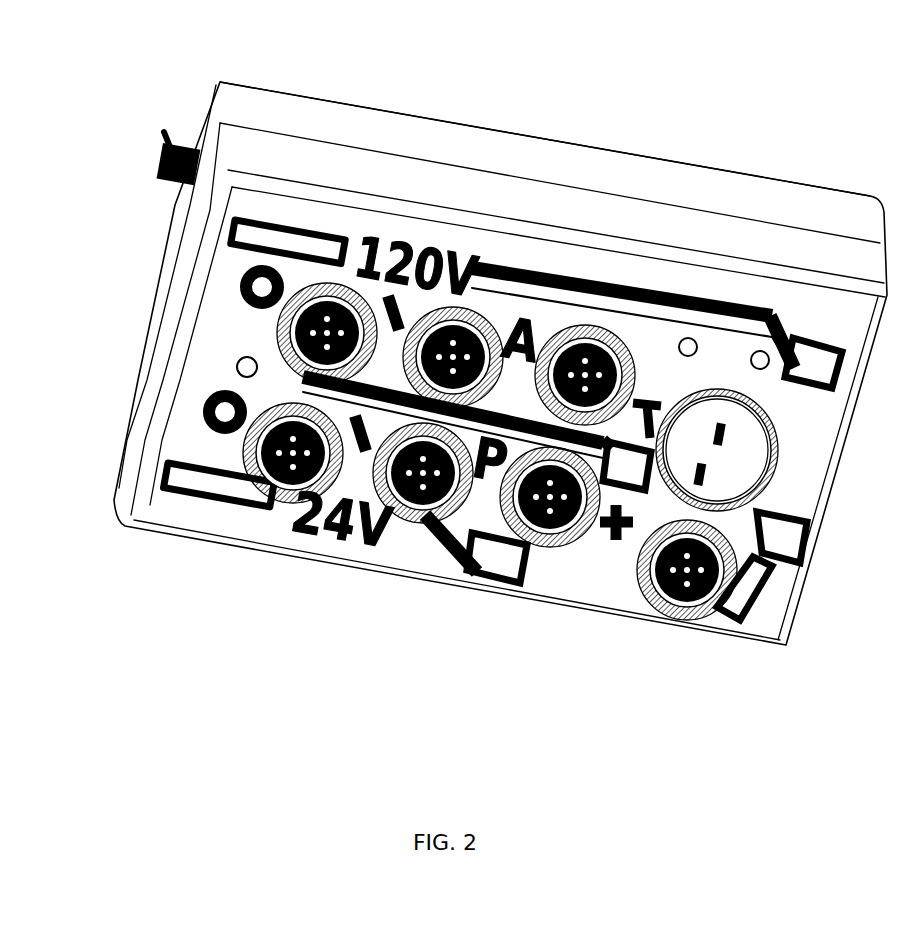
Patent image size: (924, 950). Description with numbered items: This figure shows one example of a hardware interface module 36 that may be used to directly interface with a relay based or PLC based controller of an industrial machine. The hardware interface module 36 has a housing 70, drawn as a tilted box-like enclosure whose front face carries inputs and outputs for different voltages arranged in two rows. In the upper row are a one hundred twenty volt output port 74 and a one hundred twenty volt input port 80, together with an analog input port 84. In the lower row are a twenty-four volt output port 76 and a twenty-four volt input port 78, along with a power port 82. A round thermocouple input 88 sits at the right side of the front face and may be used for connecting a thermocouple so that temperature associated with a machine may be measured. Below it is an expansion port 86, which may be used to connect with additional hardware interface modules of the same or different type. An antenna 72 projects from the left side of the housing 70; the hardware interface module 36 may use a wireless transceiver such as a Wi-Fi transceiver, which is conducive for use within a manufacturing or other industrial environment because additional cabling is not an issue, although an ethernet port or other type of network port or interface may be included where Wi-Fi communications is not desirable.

The hardware interface module 36 is at (751, 92).
The housing 70 is at (305, 118).
The antenna 72 is at (166, 153).
The 120V output port 74 is at (298, 321).
The 24 V output port 76 is at (252, 494).
The 24 V input port 78 is at (403, 515).
The 120 V input port 80 is at (473, 338).
The power port 82 is at (545, 533).
The analog input port 84 is at (597, 352).
The expansion port 86 is at (667, 590).
The thermocouple input 88 is at (735, 465).